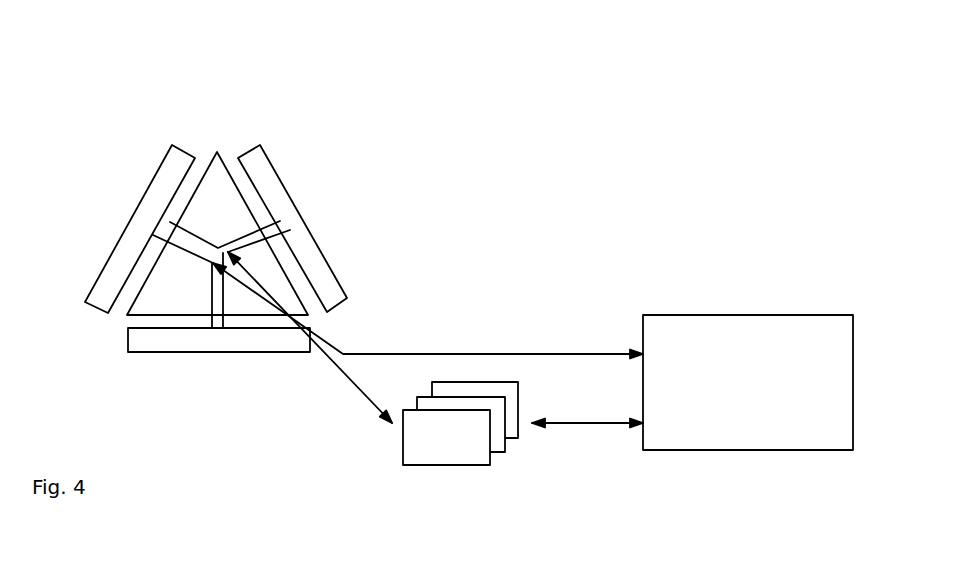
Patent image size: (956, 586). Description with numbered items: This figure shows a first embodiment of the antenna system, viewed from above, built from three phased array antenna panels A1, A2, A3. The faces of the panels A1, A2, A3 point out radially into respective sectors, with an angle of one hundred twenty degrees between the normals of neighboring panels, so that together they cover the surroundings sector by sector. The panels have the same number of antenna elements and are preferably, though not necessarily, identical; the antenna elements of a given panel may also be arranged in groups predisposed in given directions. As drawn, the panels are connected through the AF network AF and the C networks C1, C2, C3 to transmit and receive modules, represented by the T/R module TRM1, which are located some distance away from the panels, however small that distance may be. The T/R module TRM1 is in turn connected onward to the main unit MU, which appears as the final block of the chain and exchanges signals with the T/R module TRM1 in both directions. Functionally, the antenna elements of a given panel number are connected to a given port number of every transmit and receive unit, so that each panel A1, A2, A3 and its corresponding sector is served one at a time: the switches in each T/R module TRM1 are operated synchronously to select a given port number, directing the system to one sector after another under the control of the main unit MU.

The phased array antenna panel A1 is at (325, 225).
The phased array antenna panel A2 is at (210, 368).
The phased array antenna panel A3 is at (117, 217).
The AF network AF is at (335, 385).
The C network C1 is at (428, 311).
The C network C2 is at (428, 311).
The C network C3 is at (338, 345).
The T/R module TRM1 is at (460, 423).
The main unit MU is at (748, 382).